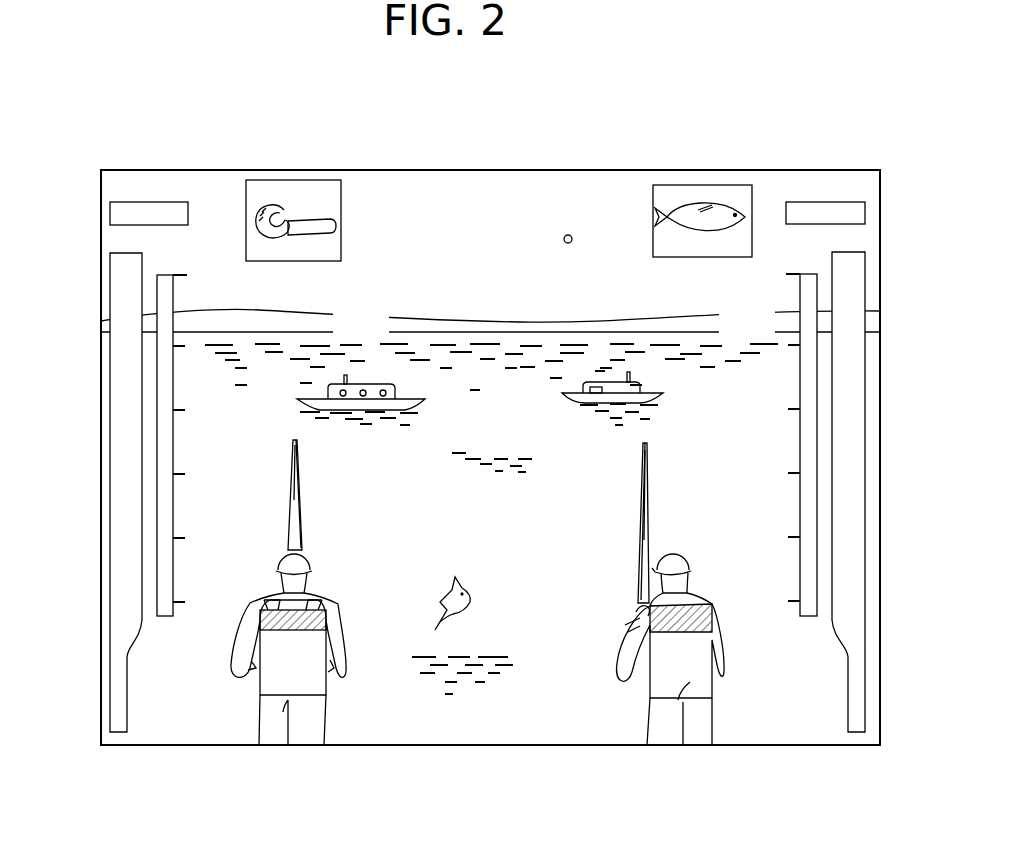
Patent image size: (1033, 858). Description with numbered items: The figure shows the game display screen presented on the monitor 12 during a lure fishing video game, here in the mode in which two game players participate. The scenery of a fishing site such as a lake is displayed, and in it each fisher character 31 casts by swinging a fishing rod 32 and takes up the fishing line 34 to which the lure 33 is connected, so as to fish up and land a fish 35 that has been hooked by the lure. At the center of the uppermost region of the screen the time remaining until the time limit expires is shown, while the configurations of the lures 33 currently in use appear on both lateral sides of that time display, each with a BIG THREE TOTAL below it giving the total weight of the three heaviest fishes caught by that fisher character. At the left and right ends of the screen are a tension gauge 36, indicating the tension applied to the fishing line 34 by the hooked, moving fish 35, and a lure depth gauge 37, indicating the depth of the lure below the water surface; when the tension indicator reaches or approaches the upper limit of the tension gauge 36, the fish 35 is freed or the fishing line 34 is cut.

The monitor 12 is at (556, 170).
The fisher character 31 is at (317, 683).
The fishing rod 32 is at (289, 530).
The lure 33 is at (277, 201).
The fishing line 34 is at (301, 513).
The fish 35 is at (450, 600).
The tension gauge 36 is at (113, 416).
The lure depth gauge 37 is at (163, 514).